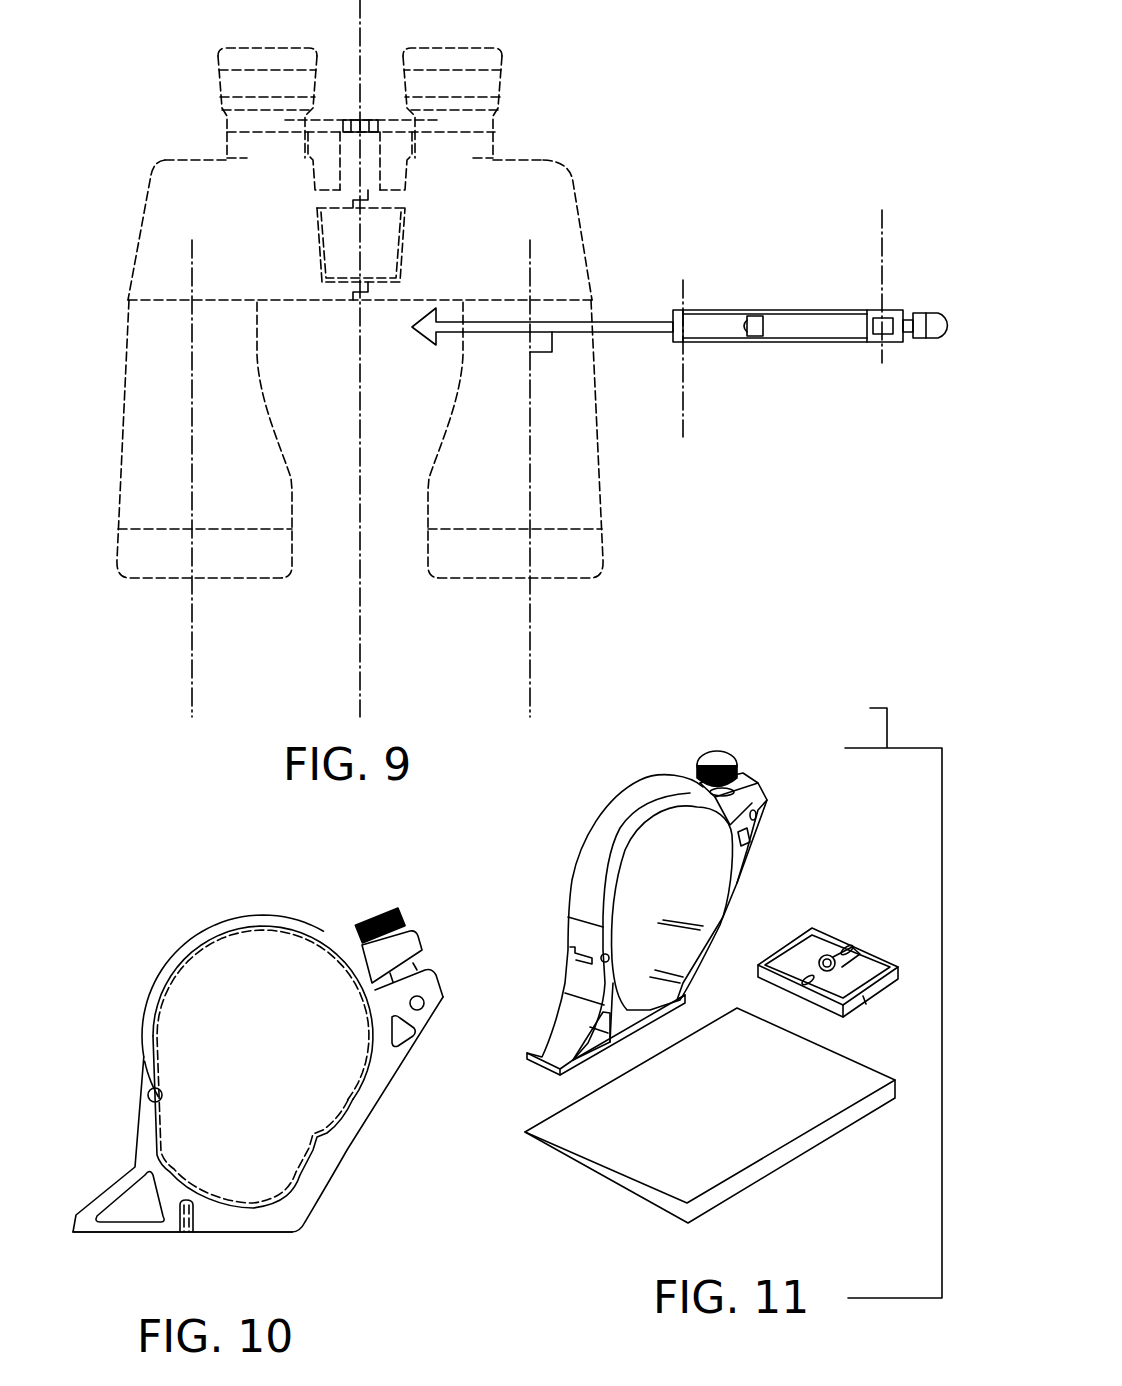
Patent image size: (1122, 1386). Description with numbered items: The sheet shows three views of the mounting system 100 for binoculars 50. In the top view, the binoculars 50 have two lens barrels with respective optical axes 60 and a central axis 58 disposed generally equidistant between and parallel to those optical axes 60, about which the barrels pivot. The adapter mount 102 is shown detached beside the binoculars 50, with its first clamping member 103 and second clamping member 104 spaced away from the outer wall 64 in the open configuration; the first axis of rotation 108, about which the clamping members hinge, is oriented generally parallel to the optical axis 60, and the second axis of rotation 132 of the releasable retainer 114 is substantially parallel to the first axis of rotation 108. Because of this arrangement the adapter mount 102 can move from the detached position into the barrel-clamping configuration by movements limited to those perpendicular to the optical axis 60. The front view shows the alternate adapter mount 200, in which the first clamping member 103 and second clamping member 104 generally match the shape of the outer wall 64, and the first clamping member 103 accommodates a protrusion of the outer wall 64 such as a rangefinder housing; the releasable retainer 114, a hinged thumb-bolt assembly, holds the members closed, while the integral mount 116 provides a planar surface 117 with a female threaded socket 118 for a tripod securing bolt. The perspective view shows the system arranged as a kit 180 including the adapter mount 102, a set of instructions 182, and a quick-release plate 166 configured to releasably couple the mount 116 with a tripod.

In FIG. 9, the binoculars 50 is at (163, 162).
In FIG. 9, the central axis 58 is at (360, 628).
In FIG. 9, the optical axes 60 is at (192, 672).
In FIG. 10, the outer wall 64 is at (163, 1010).
In FIG. 9, the mounting system 100 is at (811, 305).
In FIG. 10, the mounting system 100 is at (195, 885).
In FIG. 11, the mounting system 100 is at (671, 1016).
In FIG. 9, the adapter mount 102 is at (775, 342).
In FIG. 10, the first clamping member 103 is at (342, 1150).
In FIG. 10, the second clamping member 104 is at (258, 917).
In FIG. 9, the first axis of rotation 108 is at (683, 410).
In FIG. 10, the releasable retainer 114 is at (396, 910).
In FIG. 10, the mount 116 is at (215, 1240).
In FIG. 10, the planar surface 117 is at (147, 1232).
In FIG. 10, the female threaded socket 118 is at (185, 1232).
In FIG. 9, the second axis of rotation 132 is at (915, 286).
In FIG. 11, the quick-release plate 166 is at (827, 943).
In FIG. 11, the kit 180 is at (885, 997).
In FIG. 11, the set of instructions 182 is at (755, 1185).
In FIG. 10, the alternate adapter mount 200 is at (254, 1067).
In FIG. 11, the alternate adapter mount 200 is at (747, 853).